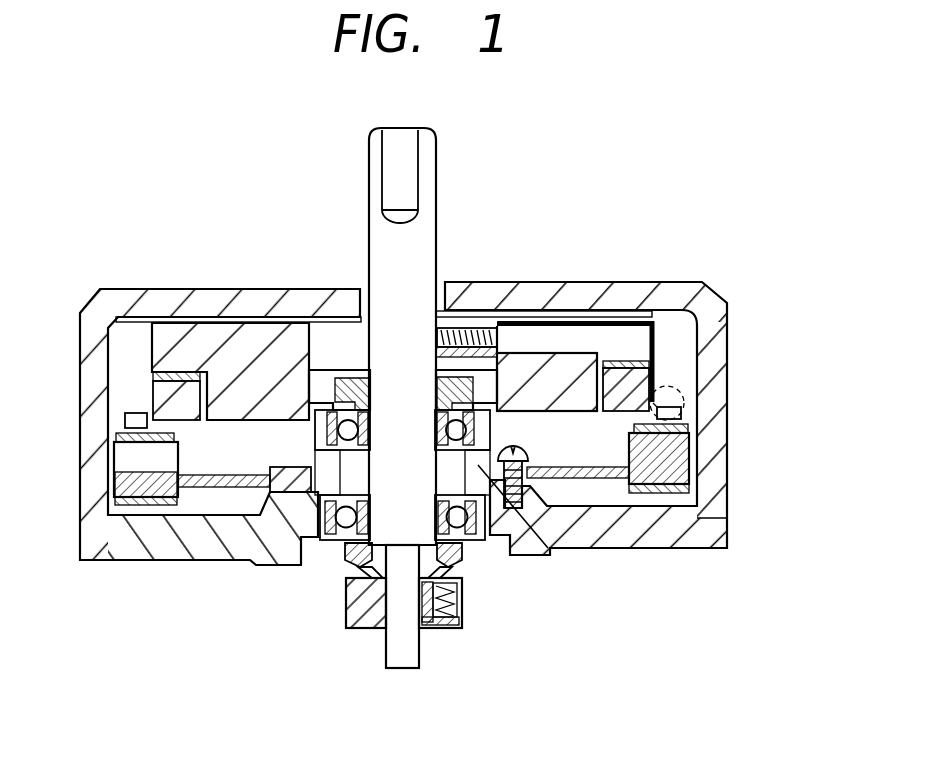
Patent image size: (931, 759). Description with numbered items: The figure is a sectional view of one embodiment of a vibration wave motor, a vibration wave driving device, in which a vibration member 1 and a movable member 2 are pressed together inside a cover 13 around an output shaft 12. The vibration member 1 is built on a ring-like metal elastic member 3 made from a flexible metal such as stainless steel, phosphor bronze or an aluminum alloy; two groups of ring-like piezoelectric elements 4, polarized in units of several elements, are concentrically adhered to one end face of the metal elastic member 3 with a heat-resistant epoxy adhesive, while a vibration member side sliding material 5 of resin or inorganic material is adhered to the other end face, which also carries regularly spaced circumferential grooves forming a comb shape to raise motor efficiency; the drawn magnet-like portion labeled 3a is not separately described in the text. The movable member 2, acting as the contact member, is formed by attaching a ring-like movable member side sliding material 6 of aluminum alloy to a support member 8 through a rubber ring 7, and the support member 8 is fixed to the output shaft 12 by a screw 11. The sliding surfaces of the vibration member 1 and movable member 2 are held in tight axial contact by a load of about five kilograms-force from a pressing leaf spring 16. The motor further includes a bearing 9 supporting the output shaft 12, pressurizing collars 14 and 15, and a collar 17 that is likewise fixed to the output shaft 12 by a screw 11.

The vibration member 1 is at (800, 412).
The movable member 2 is at (788, 286).
The metal elastic member 3 is at (690, 462).
The magnet 3a is at (122, 456).
The piezoelectric elements 4 is at (690, 489).
The vibration member side sliding material 5 is at (690, 436).
The movable member side sliding material 6 is at (683, 403).
The rubber ring 7 is at (597, 352).
The support member 8 is at (653, 343).
The bearing 9 is at (303, 393).
The screw 11 is at (502, 338).
The output shaft 12 is at (420, 246).
The cover 13 is at (652, 283).
The pressurizing collar 14 is at (347, 380).
The pressurizing collar 15 is at (462, 551).
The pressing leaf spring 16 is at (460, 568).
The collar 17 is at (358, 608).